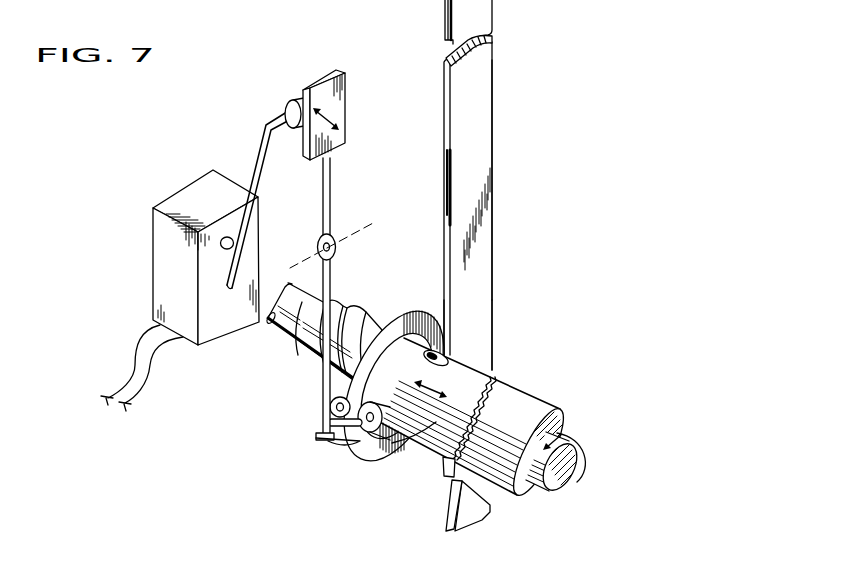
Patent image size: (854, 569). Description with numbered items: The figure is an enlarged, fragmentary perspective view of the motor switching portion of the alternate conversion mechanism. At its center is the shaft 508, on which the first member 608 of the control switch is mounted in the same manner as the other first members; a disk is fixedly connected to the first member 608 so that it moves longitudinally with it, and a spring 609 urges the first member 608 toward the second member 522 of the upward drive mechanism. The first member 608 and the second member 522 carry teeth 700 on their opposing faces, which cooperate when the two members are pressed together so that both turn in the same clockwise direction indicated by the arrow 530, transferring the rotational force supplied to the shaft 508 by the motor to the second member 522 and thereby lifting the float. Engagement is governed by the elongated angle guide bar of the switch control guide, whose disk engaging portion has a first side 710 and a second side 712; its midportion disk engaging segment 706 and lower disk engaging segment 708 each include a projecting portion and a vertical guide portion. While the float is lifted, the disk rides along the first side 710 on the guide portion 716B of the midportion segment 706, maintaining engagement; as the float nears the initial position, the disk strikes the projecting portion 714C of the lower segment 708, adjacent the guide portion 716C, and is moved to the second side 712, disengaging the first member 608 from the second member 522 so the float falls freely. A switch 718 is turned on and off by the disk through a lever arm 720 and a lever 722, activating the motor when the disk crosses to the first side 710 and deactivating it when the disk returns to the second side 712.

The shaft 508 is at (557, 440).
The second member 522 is at (553, 404).
The arrow 530 is at (586, 443).
The first member 608 is at (420, 449).
The spring 609 is at (302, 353).
The teeth 700 is at (511, 378).
The midportion disk engaging segment 706 is at (492, 52).
The lower disk engaging segment 708 is at (490, 512).
The first side 710 is at (486, 341).
The second side 712 is at (447, 125).
The projecting portion 714C is at (450, 478).
The guide portion 716B is at (480, 92).
The guide portion 716C is at (447, 510).
The switch 718 is at (153, 245).
The lever arm 720 is at (321, 392).
The lever 722 is at (273, 125).